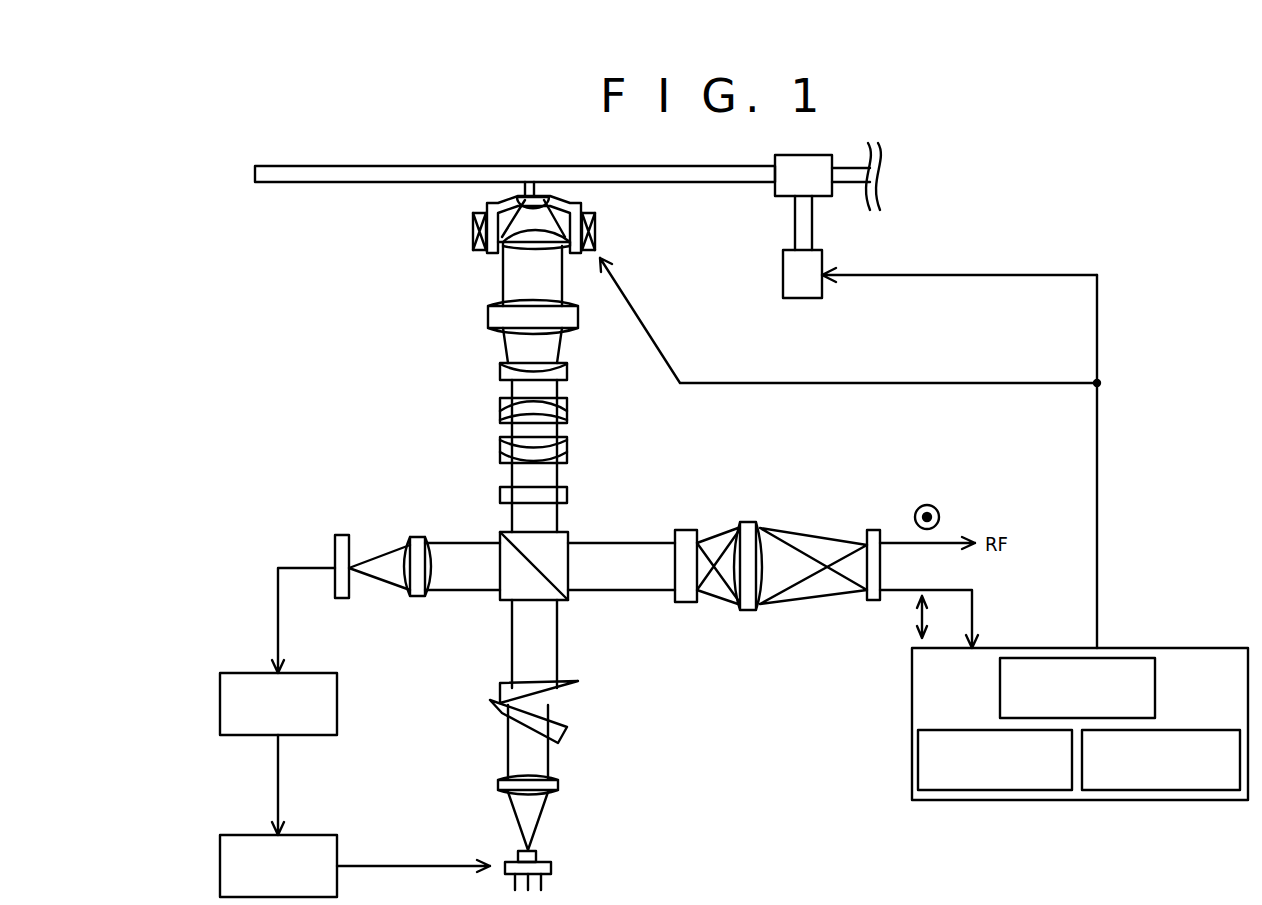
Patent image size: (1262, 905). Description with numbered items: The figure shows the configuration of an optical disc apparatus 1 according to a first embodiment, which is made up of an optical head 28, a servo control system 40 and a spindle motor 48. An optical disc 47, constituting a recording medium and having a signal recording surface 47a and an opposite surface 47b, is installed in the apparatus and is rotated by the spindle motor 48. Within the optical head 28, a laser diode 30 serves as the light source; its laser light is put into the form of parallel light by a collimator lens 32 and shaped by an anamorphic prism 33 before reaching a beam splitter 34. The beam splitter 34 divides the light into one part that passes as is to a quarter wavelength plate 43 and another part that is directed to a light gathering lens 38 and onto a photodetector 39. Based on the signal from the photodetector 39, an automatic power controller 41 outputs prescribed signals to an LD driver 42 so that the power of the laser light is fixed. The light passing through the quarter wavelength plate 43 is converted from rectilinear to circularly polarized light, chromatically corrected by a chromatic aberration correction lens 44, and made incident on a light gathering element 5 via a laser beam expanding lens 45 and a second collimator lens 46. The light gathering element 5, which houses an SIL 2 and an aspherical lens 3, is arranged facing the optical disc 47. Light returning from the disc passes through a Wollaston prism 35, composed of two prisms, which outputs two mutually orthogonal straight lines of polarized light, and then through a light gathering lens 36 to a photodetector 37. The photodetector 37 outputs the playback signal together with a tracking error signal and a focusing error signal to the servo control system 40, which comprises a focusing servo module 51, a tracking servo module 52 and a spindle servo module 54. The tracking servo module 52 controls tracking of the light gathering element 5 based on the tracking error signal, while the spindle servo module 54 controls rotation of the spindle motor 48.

The optical disc apparatus 1 is at (1082, 156).
The SIL 2 is at (522, 196).
The aspherical lens 3 is at (522, 240).
The light gathering element 5 is at (571, 185).
The optical head 28 is at (255, 387).
The laser diode 30 is at (553, 869).
The collimator lens 32 is at (560, 784).
The anamorphic prism 33 is at (490, 703).
The beam splitter 34 is at (572, 530).
The Wollaston prism 35 is at (688, 603).
The light gathering lens 36 is at (748, 612).
The photodetector 37 is at (874, 602).
The light gathering lens 38 is at (418, 597).
The photodetector 39 is at (343, 535).
The servo control system 40 is at (1196, 648).
The automatic power controller 41 is at (220, 703).
The LD driver 42 is at (220, 866).
The quarter wavelength plate 43 is at (500, 495).
The chromatic aberration correction lens 44 is at (490, 398).
The laser beam expanding lens 45 is at (500, 372).
The collimator lens 46 is at (488, 317).
The optical disc 47 is at (340, 166).
The signal recording surface 47a is at (382, 182).
The disc surface 47b is at (255, 178).
The spindle motor 48 is at (783, 276).
The focusing servo module 51 is at (1046, 658).
The tracking servo module 52 is at (998, 790).
The spindle servo module 54 is at (1158, 790).